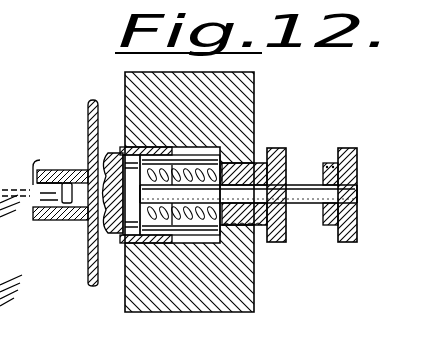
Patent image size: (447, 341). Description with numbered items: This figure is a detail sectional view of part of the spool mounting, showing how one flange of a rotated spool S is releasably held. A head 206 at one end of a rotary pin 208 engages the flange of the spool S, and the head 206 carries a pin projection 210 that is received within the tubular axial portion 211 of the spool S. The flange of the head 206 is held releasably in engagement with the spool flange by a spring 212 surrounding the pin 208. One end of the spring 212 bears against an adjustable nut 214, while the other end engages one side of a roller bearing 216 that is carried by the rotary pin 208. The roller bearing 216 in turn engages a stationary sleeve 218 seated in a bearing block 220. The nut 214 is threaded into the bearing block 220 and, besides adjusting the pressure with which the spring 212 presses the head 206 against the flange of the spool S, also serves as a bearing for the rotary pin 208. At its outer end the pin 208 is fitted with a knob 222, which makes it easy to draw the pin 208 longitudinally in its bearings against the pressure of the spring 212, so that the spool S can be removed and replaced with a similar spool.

The spool S is at (100, 104).
The head 206 is at (85, 218).
The rotary pin 208 is at (274, 203).
The pin projection 210 is at (82, 184).
The tubular axial portion 211 is at (36, 170).
The spring 212 is at (224, 152).
The adjustable nut 214 is at (252, 162).
The roller bearing 216 is at (122, 244).
The stationary sleeve 218 is at (151, 244).
The bearing block 220 is at (246, 84).
The knob 222 is at (357, 156).